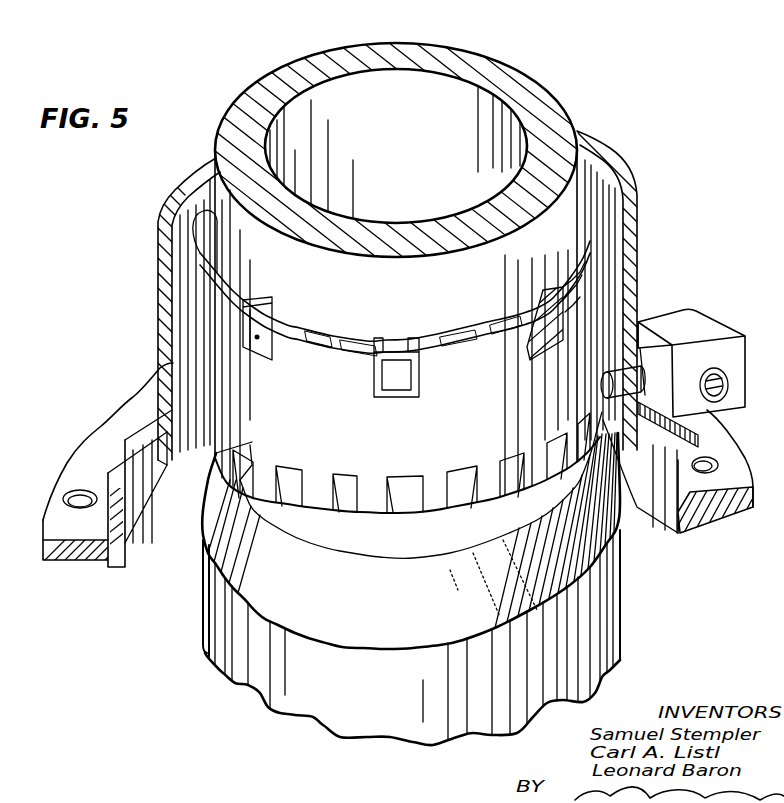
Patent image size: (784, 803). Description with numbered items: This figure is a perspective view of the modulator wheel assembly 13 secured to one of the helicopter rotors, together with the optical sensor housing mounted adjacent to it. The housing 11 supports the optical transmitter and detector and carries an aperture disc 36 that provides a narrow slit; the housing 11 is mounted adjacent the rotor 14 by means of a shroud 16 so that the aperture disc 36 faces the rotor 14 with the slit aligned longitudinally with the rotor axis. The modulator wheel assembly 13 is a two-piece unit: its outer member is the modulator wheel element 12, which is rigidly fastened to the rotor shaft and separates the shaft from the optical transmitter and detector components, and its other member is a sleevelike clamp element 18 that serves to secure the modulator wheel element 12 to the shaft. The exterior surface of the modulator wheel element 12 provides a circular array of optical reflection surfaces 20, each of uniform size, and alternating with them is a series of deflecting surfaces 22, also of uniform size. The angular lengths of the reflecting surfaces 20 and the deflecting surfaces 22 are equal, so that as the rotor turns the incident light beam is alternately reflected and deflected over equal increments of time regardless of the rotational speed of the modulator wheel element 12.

The housing 11 is at (703, 335).
The modulator wheel element 12 is at (246, 419).
The modulator wheel assembly 13 is at (412, 430).
The rotor 14 is at (480, 62).
The shroud 16 is at (740, 503).
The clamp element 18 is at (295, 311).
The optical reflection surfaces 20 is at (430, 520).
The deflecting surfaces 22 is at (343, 478).
The aperture disc 36 is at (593, 423).